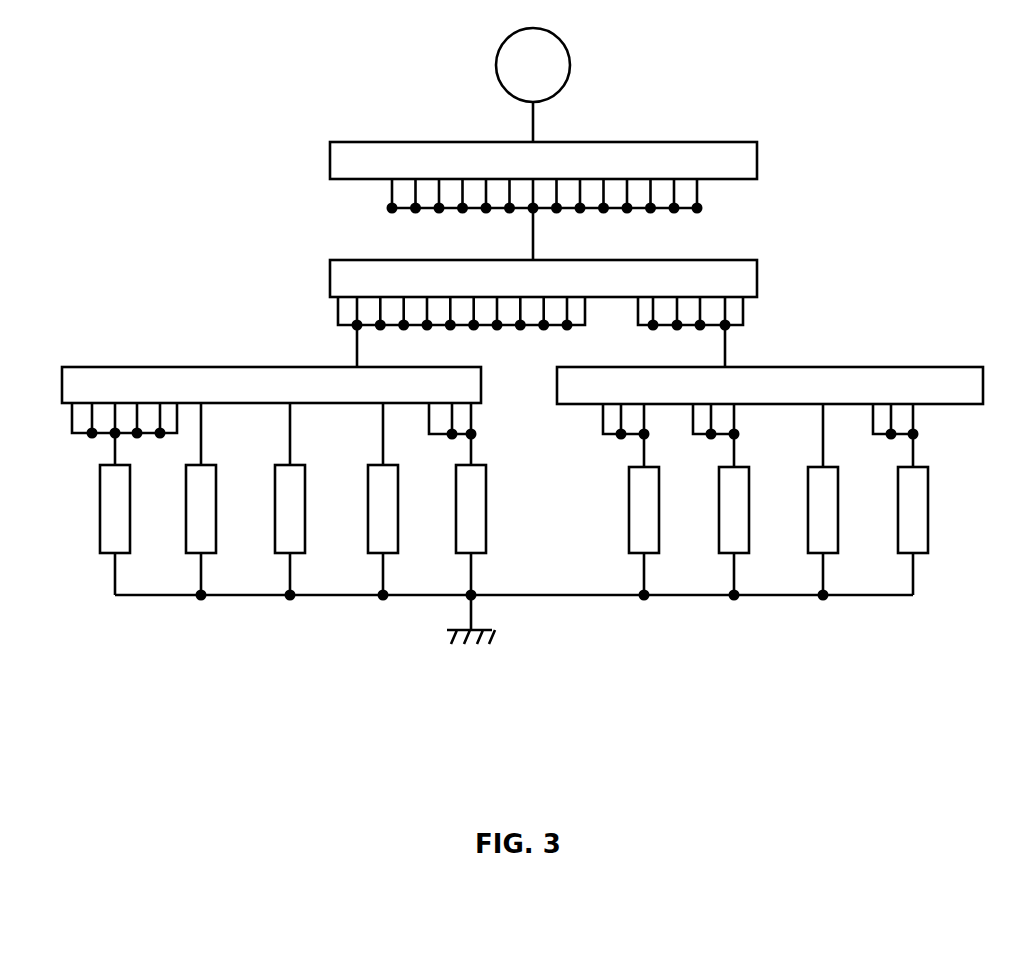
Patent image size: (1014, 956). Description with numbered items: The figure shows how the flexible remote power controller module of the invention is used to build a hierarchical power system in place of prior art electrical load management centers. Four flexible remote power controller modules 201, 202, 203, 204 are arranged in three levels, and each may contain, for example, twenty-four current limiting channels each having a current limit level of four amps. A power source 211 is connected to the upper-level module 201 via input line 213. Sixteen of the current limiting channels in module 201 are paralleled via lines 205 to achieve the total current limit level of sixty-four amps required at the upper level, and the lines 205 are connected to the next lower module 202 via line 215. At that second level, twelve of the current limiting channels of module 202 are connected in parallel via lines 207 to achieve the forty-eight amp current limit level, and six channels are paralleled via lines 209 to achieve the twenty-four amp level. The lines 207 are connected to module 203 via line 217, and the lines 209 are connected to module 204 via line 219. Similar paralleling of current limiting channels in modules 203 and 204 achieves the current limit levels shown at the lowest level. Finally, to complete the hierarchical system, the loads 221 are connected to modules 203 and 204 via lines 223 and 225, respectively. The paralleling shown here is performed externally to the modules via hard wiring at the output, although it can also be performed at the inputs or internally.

The power source 211 is at (571, 65).
The input line 213 is at (533, 119).
The flexible remote power controller module 201 is at (757, 158).
The lines 205 is at (385, 192).
The line 215 is at (533, 238).
The flexible remote power controller module 202 is at (757, 277).
The lines 207 is at (330, 308).
The lines 209 is at (750, 318).
The line 217 is at (357, 347).
The line 219 is at (725, 348).
The flexible remote power controller module 203 is at (138, 367).
The flexible remote power controller module 204 is at (921, 367).
The loads 221 is at (97, 507).
The lines 223 is at (478, 418).
The lines 225 is at (919, 419).